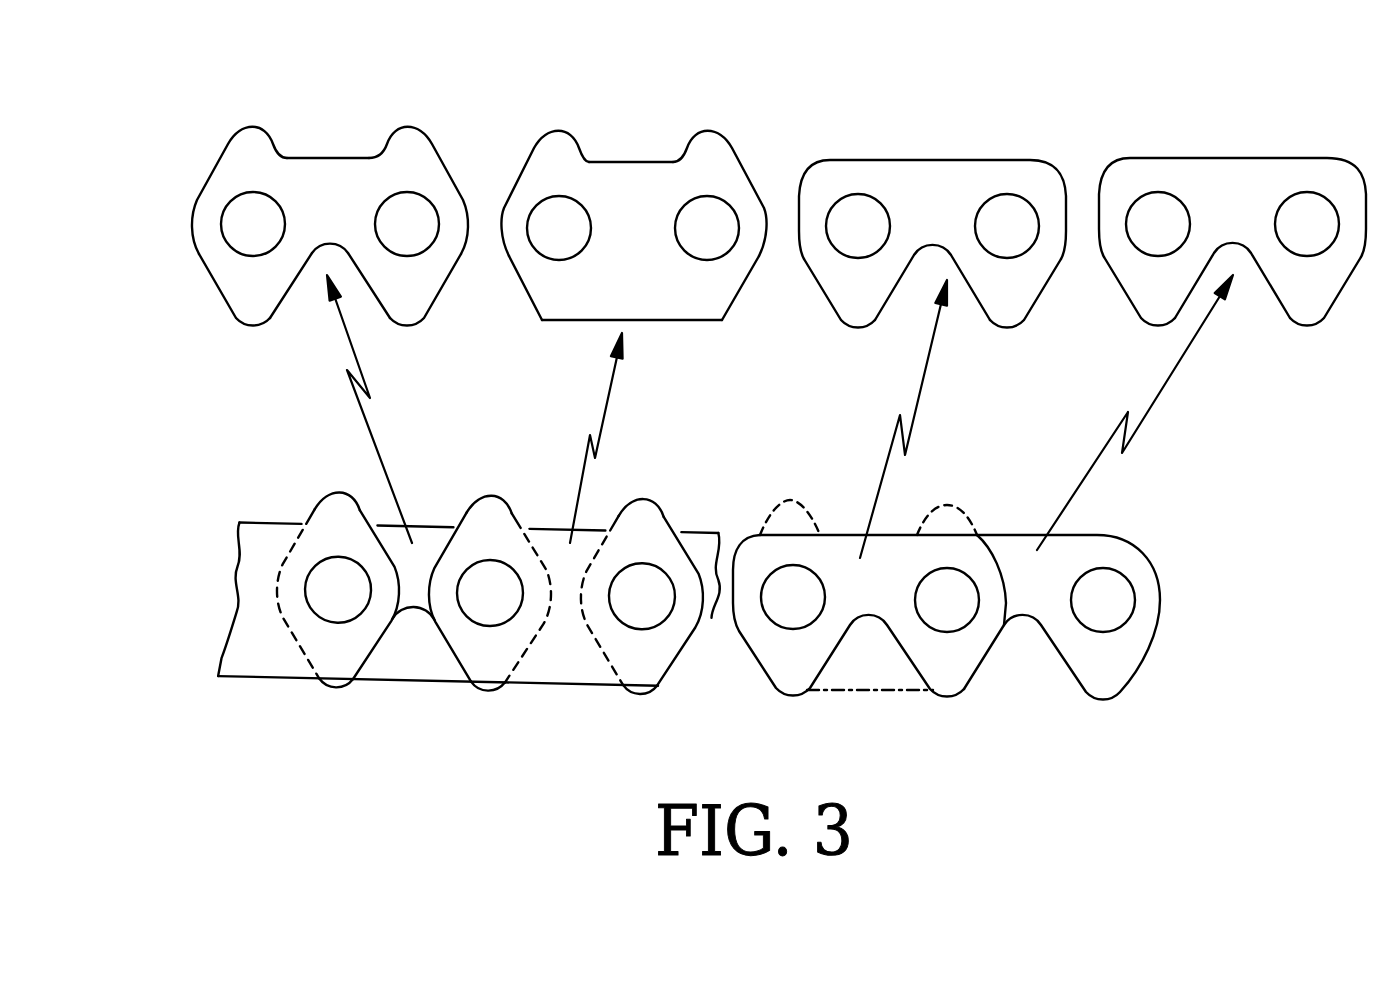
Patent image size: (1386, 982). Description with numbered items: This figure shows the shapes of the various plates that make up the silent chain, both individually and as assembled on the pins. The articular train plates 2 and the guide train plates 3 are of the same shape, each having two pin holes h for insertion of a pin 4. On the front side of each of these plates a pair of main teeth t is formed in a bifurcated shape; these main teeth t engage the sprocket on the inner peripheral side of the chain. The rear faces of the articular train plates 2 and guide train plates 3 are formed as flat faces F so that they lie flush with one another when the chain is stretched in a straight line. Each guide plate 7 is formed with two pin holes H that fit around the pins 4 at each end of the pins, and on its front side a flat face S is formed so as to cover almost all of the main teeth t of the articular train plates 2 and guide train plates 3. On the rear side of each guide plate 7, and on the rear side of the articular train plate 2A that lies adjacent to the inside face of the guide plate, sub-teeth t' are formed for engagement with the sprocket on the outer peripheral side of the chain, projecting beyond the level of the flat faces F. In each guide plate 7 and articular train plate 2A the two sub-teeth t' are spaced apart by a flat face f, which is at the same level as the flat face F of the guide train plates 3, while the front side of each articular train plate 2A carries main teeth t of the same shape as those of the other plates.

The articular train plate 2A is at (422, 158).
The guide plate 7 is at (727, 157).
The guide train plate 3 is at (1030, 177).
The articular train plate 2 is at (1340, 177).
The pin 4 is at (508, 613).
The pin hole h is at (240, 203).
The pin hole H is at (535, 245).
The main teeth t is at (780, 324).
The sub-teeth t' is at (479, 153).
The flat face f is at (327, 158).
The flat face F is at (926, 160).
The flat face S is at (687, 320).